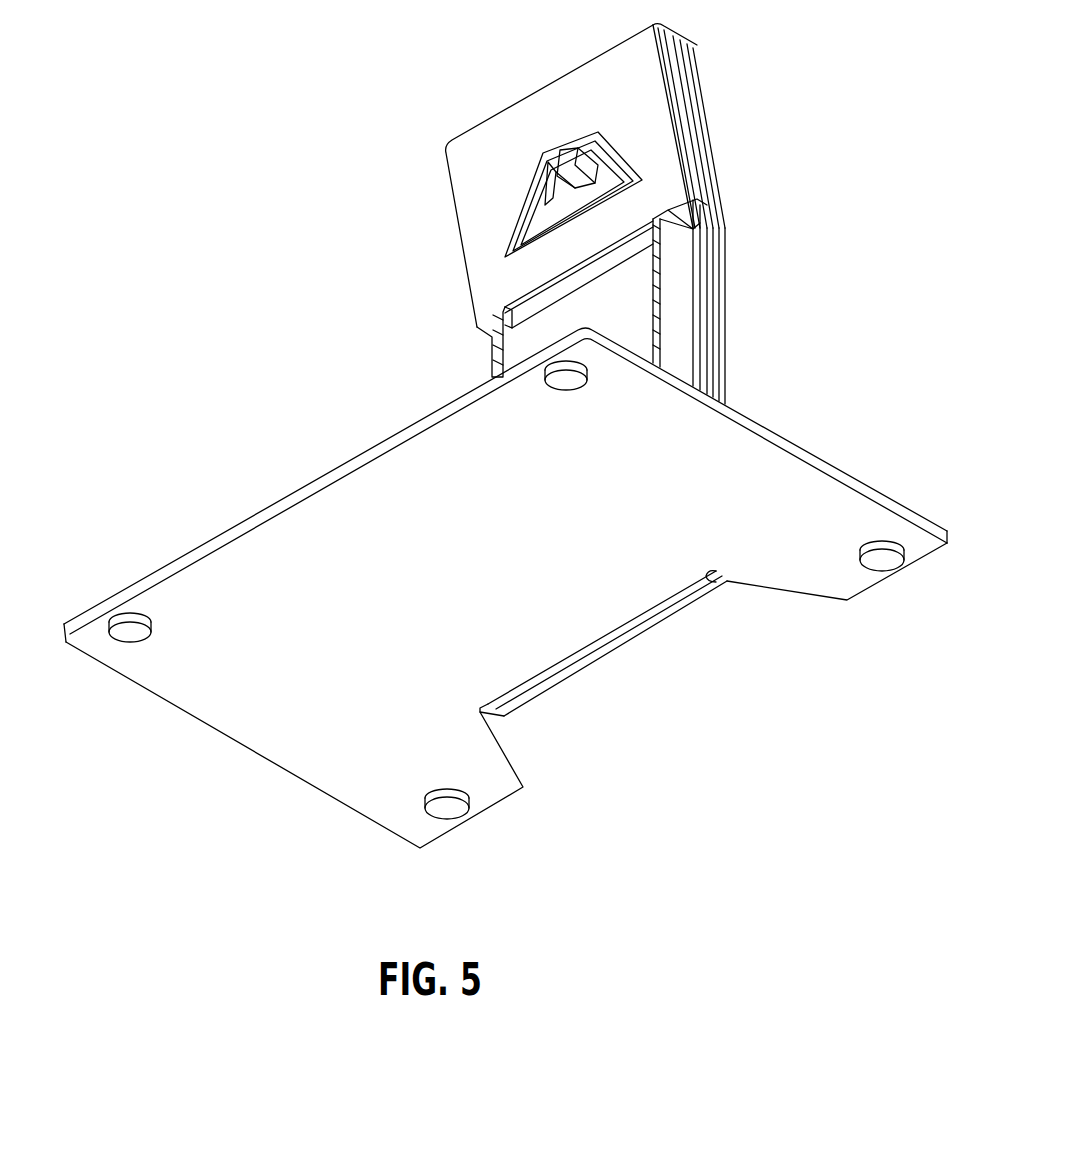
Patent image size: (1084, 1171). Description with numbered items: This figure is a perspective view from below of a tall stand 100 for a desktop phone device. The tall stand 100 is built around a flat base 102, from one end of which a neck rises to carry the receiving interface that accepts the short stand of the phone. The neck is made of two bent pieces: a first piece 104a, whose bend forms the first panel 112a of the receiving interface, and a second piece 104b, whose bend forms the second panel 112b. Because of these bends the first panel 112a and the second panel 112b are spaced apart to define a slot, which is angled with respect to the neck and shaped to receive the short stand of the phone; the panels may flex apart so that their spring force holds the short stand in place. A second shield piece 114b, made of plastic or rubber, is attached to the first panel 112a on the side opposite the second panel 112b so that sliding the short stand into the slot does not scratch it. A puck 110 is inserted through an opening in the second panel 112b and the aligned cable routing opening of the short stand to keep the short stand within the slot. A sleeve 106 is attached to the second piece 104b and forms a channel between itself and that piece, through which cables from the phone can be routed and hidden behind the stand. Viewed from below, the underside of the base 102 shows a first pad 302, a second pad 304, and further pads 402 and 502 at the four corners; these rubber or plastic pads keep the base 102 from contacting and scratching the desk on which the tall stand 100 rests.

The tall stand 100 is at (487, 433).
The base 102 is at (505, 588).
The first piece 104a is at (783, 316).
The second piece 104b is at (772, 308).
The sleeve 106 is at (714, 294).
The puck 110 is at (547, 194).
The first panel 112a is at (524, 201).
The second panel 112b is at (738, 126).
The second shield piece 114b is at (722, 117).
The first pad 302 is at (485, 824).
The second pad 304 is at (89, 644).
The pad 402 is at (606, 391).
The pad 502 is at (825, 542).